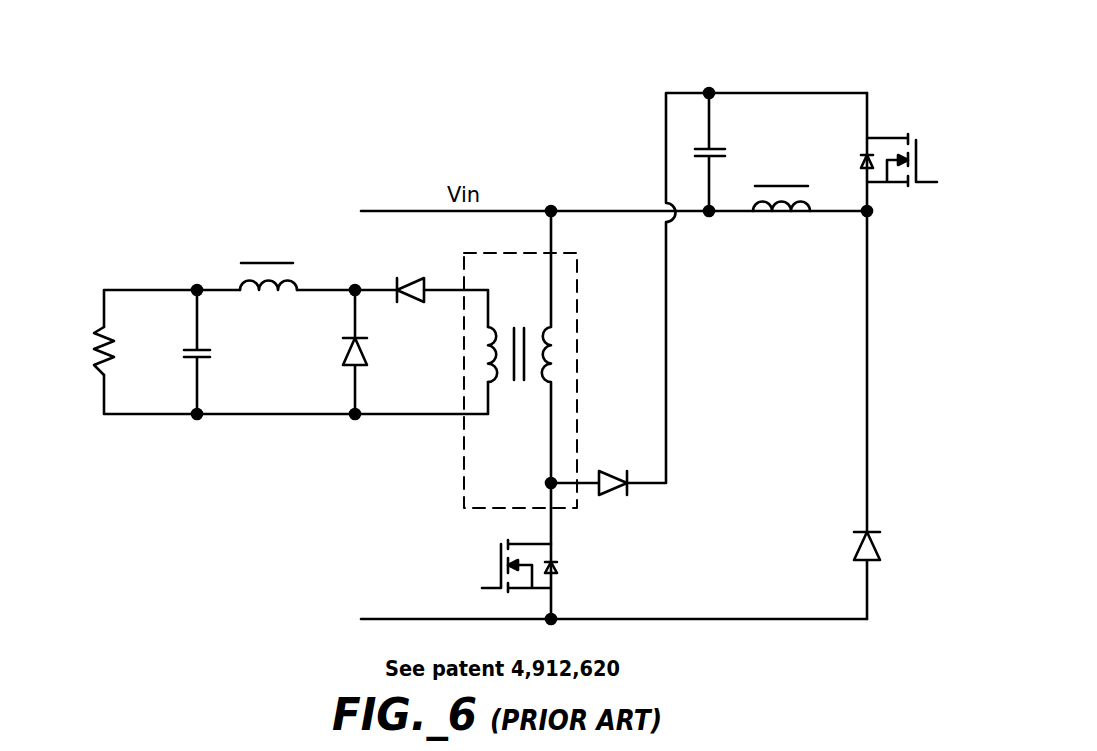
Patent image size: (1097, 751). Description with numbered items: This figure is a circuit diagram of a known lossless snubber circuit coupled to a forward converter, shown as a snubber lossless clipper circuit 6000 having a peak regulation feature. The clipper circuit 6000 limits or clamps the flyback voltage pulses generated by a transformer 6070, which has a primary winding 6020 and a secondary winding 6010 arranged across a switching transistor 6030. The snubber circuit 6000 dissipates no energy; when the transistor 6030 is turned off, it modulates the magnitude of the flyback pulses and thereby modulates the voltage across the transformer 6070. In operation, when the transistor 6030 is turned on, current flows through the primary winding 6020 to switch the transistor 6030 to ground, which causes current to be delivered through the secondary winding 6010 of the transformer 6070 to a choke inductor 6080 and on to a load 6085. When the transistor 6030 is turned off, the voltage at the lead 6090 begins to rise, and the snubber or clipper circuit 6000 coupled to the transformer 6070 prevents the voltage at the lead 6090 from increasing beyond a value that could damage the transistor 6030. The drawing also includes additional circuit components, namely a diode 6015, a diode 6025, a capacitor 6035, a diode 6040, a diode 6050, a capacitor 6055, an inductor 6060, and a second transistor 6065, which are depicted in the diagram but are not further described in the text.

The snubber lossless clipper circuit 6000 is at (749, 63).
The secondary winding 6010 is at (492, 362).
The rectifier diode 6015 is at (408, 278).
The primary winding 6020 is at (548, 362).
The freewheeling diode 6025 is at (343, 362).
The switching transistor 6030 is at (497, 587).
The output filter capacitor 6035 is at (191, 360).
The diode 6040 is at (863, 528).
The diode 6050 is at (628, 487).
The capacitor 6055 is at (717, 145).
The inductor 6060 is at (788, 213).
The auxiliary switch MOSFET 6065 is at (923, 178).
The transformer 6070 is at (517, 253).
The choke inductor 6080 is at (270, 263).
The load 6085 is at (118, 357).
The lead 6090 is at (547, 477).